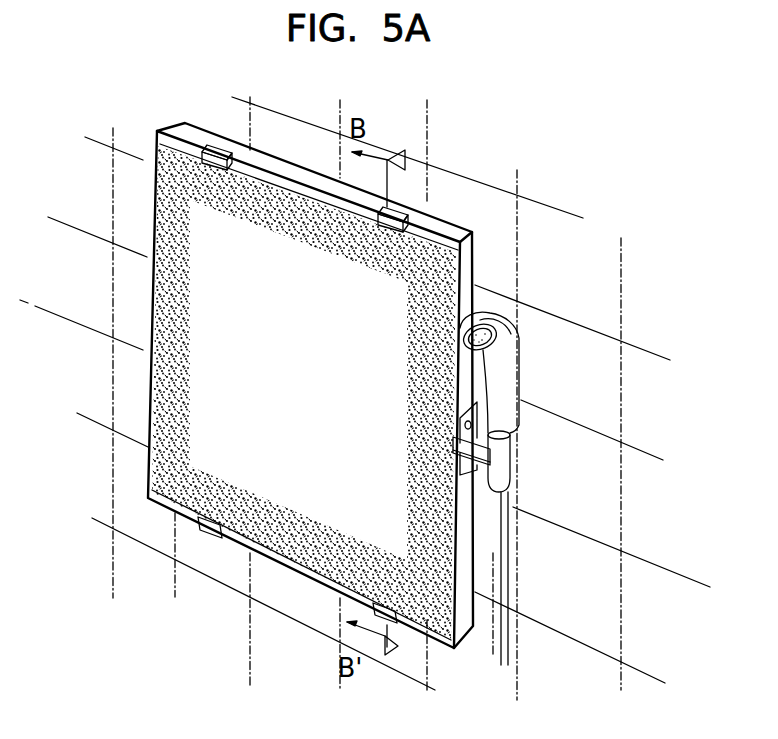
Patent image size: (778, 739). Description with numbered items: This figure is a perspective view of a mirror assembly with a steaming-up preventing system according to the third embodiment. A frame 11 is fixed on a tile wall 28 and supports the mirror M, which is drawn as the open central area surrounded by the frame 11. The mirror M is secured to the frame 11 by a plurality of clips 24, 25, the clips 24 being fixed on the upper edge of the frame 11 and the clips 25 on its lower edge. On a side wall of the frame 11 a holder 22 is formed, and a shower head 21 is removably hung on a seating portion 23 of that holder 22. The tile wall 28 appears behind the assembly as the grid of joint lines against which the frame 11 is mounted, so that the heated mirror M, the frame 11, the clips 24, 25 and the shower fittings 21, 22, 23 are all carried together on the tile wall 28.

The frame 11 is at (475, 270).
The shower head 21 is at (512, 371).
The holder 22 is at (492, 490).
The seating portion 23 is at (513, 452).
The clips 24 is at (400, 208).
The clips 25 is at (363, 607).
The tile wall 28 is at (205, 562).
The mirror M is at (205, 432).